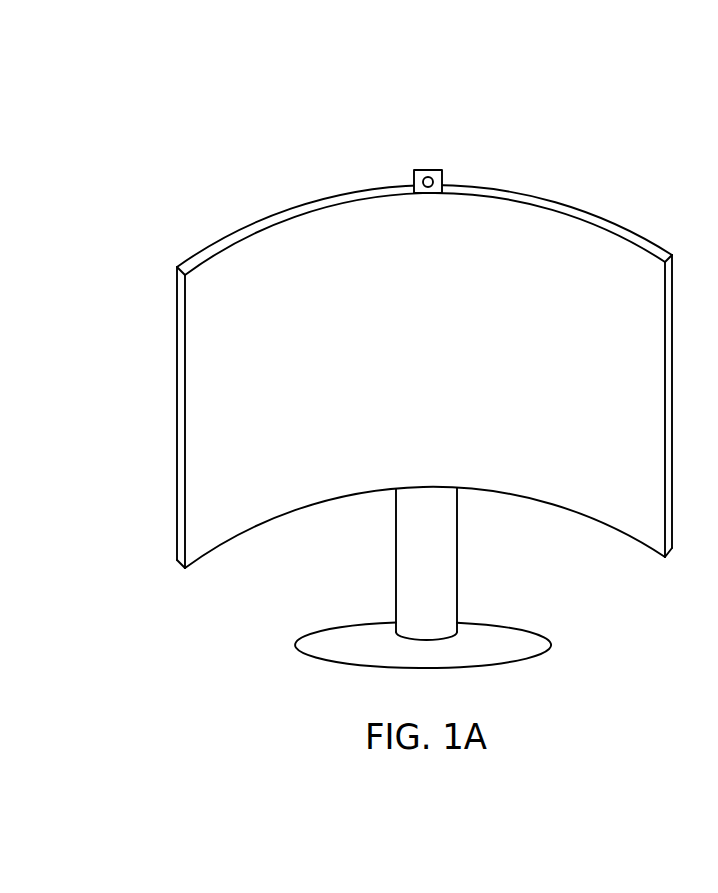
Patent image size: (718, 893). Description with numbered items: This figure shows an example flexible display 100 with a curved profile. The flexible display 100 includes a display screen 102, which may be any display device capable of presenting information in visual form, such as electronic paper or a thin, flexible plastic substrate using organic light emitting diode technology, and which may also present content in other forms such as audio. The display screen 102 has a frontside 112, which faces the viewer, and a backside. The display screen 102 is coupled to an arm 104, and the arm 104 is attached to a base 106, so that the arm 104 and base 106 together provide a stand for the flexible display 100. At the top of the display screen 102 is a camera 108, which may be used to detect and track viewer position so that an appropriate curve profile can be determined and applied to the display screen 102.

The flexible display 100 is at (537, 49).
The display screen 102 is at (177, 313).
The arm 104 is at (396, 553).
The base 106 is at (298, 645).
The camera 108 is at (429, 170).
The frontside 112 is at (190, 401).